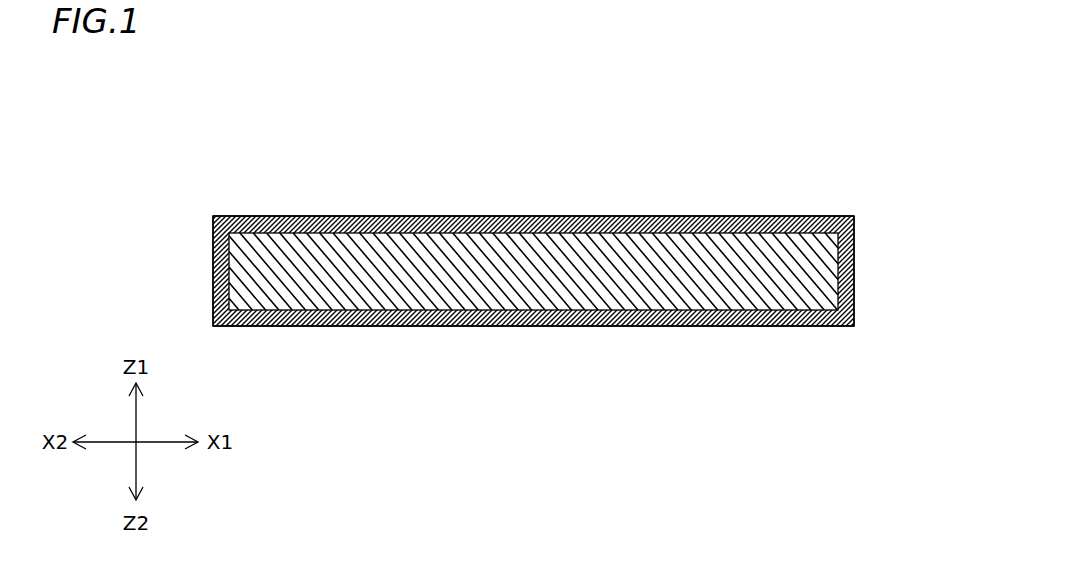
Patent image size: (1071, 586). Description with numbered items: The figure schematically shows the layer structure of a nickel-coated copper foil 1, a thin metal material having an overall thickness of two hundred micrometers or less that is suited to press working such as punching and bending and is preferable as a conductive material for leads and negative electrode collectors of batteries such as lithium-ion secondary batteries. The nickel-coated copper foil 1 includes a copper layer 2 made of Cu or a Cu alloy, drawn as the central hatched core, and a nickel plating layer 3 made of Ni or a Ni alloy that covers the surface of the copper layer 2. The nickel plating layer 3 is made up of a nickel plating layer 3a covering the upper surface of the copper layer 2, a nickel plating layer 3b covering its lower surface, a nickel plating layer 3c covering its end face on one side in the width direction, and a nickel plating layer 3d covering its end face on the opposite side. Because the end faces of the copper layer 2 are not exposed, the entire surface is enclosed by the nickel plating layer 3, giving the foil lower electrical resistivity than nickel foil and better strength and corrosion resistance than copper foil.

The nickel-coated copper foil 1 is at (577, 181).
The copper layer 2 is at (390, 215).
The nickel plating layer 3 is at (659, 214).
The nickel plating layer 3a is at (780, 214).
The nickel plating layer 3b is at (782, 326).
The nickel plating layer 3c is at (855, 271).
The nickel plating layer 3d is at (212, 267).